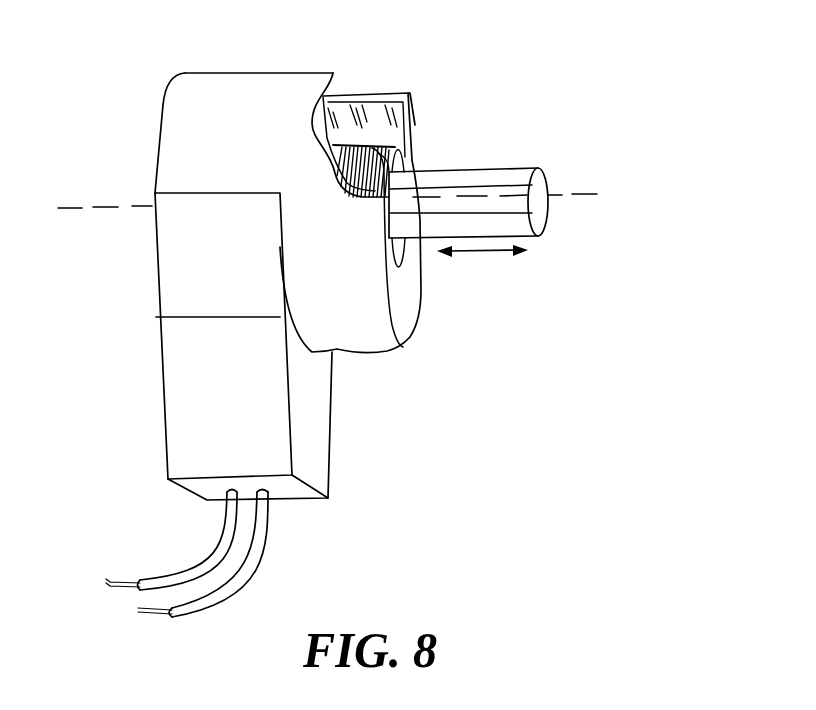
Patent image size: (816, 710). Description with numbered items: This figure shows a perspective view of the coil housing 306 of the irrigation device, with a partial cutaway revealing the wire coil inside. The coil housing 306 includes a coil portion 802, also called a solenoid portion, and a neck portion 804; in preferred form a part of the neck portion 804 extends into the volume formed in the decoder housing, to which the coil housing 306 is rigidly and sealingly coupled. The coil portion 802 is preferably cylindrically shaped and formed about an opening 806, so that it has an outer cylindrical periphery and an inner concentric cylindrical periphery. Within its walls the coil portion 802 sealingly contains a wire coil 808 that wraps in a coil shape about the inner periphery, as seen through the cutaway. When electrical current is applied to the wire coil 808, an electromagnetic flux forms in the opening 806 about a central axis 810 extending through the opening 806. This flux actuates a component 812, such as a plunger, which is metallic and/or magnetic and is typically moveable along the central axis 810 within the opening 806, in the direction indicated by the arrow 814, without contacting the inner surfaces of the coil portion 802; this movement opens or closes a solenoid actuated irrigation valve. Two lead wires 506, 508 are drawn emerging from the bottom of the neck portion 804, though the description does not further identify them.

The coil housing 306 is at (462, 80).
The coil portion 802 is at (235, 90).
The neck portion 804 is at (153, 215).
The opening 806 is at (412, 258).
The wire coil 808 is at (377, 133).
The central axis 810 is at (585, 192).
The component 812 is at (465, 168).
The arrow 814 is at (480, 254).
The first lead wire 506 is at (217, 538).
The second lead wire 508 is at (263, 538).